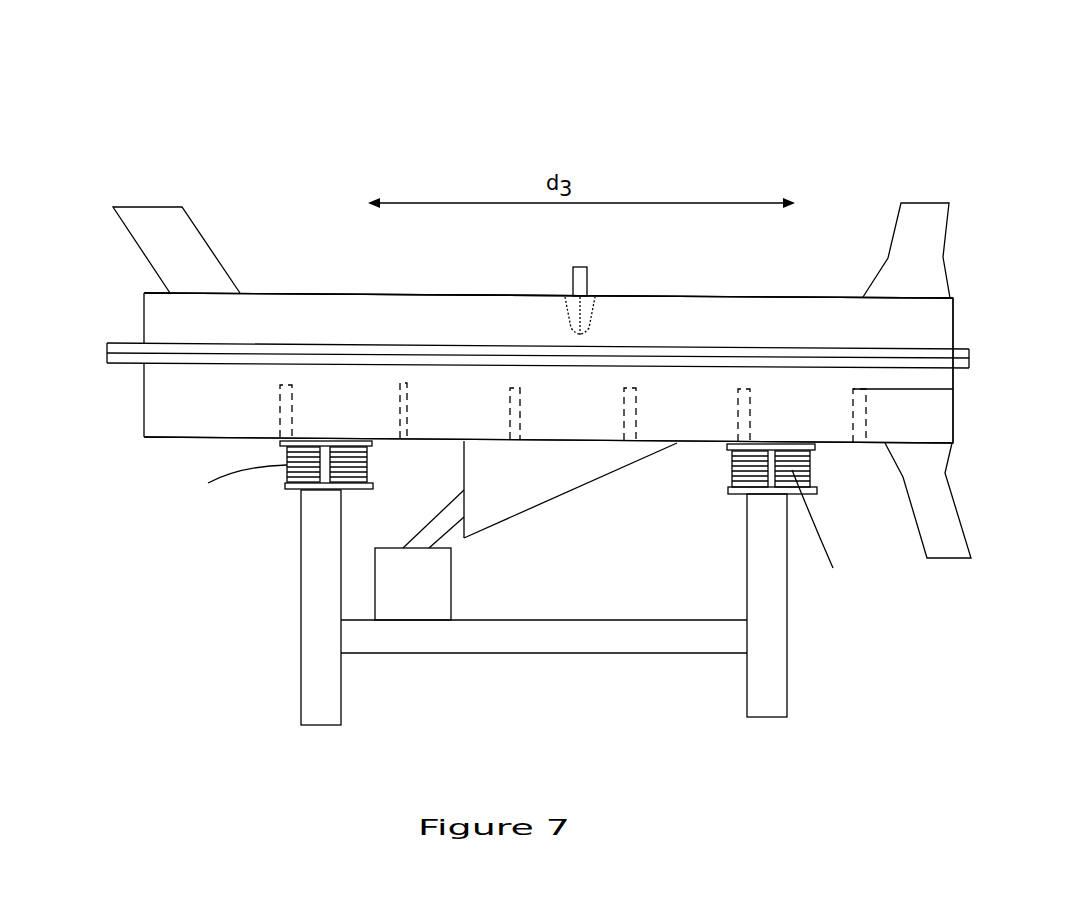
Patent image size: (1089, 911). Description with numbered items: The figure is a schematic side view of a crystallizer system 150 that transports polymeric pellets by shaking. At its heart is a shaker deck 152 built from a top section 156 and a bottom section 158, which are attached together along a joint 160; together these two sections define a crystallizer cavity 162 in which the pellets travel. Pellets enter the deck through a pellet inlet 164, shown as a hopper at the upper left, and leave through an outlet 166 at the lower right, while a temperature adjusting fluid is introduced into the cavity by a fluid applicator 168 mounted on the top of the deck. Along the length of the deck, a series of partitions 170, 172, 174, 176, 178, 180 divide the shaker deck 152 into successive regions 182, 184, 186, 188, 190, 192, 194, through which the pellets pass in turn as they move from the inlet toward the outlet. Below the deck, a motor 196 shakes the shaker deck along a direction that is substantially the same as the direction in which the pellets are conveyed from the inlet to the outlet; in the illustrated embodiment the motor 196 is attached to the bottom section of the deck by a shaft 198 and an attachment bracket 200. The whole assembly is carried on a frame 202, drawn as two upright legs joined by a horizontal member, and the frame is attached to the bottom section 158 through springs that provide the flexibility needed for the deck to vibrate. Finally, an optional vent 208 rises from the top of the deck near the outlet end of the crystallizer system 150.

The crystallizer system 150 is at (860, 106).
The shaker deck 152 is at (989, 248).
The top section 156 is at (144, 318).
The bottom section 158 is at (142, 401).
The joint 160 is at (107, 352).
The crystallizer cavity 162 is at (262, 325).
The pellet inlet 164 is at (165, 242).
The outlet 166 is at (933, 527).
The fluid applicator 168 is at (586, 266).
The partition 170 is at (285, 382).
The partition 172 is at (403, 383).
The partition 174 is at (517, 382).
The partition 176 is at (637, 383).
The partition 178 is at (743, 387).
The partition 180 is at (953, 389).
The region 182 is at (184, 417).
The region 184 is at (311, 417).
The region 186 is at (436, 417).
The region 188 is at (559, 417).
The region 190 is at (679, 417).
The region 192 is at (793, 422).
The region 194 is at (891, 424).
The motor 196 is at (398, 590).
The shaft 198 is at (447, 535).
The attachment bracket 200 is at (538, 488).
The frame 202 is at (315, 637).
The vent 208 is at (913, 222).